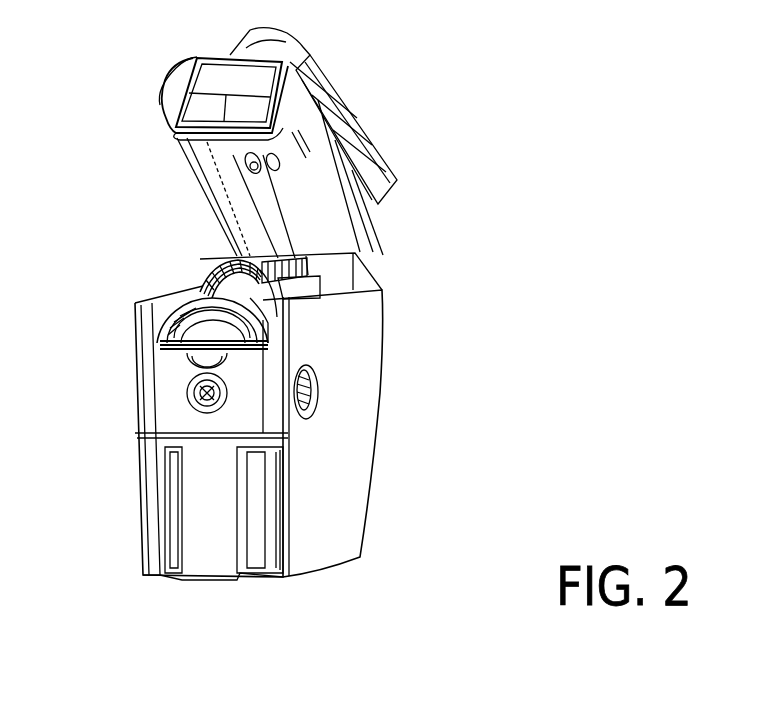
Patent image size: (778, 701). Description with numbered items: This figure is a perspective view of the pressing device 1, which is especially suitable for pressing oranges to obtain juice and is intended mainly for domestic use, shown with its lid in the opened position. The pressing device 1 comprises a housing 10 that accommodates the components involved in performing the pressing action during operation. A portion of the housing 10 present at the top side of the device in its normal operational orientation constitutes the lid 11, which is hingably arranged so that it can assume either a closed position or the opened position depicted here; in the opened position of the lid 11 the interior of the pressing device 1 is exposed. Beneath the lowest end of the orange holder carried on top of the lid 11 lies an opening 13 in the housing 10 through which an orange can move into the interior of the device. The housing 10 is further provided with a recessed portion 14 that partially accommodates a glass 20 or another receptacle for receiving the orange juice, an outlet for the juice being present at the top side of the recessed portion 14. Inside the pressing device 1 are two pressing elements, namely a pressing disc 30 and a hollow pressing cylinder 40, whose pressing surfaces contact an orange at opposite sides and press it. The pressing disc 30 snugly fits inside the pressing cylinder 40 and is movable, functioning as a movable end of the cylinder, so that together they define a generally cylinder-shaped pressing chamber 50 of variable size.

The pressing device 1 is at (115, 432).
The housing 10 is at (360, 405).
The lid 11 is at (208, 203).
The opening 13 is at (270, 146).
The recessed portion 14 is at (252, 490).
The glass 20 is at (195, 528).
The pressing disc 30 is at (205, 268).
The pressing cylinder 40 is at (170, 313).
The pressing chamber 50 is at (205, 283).